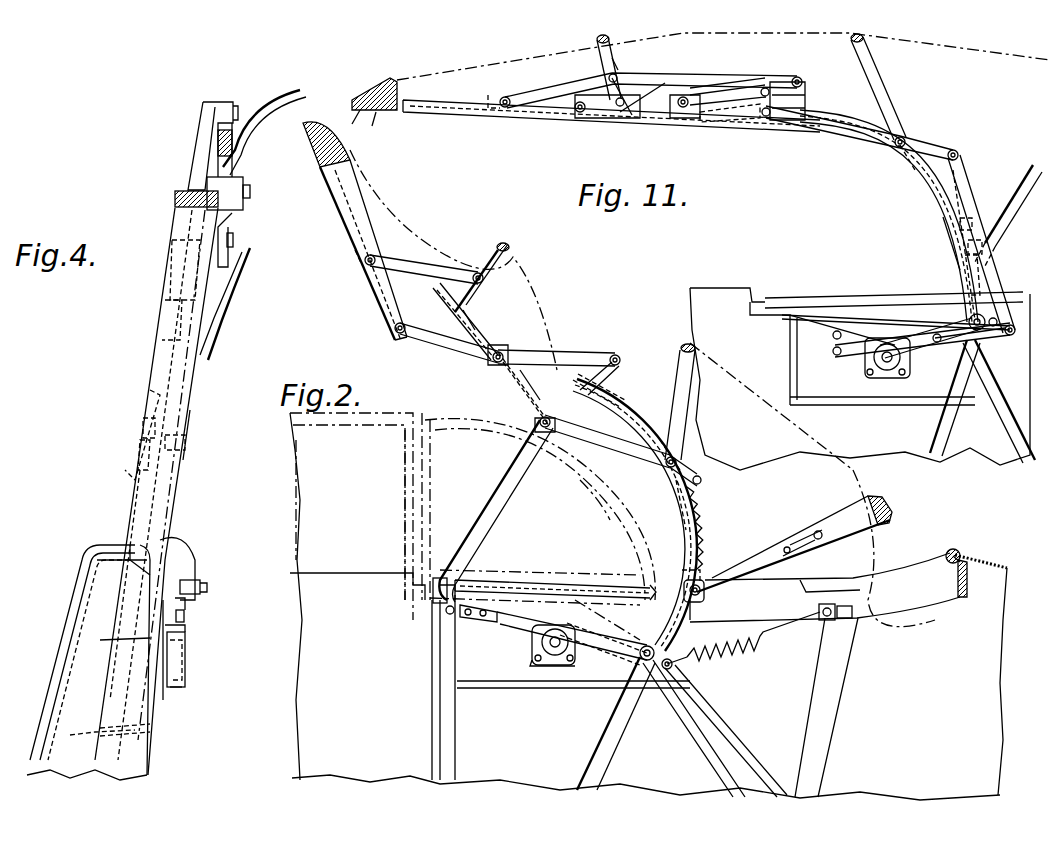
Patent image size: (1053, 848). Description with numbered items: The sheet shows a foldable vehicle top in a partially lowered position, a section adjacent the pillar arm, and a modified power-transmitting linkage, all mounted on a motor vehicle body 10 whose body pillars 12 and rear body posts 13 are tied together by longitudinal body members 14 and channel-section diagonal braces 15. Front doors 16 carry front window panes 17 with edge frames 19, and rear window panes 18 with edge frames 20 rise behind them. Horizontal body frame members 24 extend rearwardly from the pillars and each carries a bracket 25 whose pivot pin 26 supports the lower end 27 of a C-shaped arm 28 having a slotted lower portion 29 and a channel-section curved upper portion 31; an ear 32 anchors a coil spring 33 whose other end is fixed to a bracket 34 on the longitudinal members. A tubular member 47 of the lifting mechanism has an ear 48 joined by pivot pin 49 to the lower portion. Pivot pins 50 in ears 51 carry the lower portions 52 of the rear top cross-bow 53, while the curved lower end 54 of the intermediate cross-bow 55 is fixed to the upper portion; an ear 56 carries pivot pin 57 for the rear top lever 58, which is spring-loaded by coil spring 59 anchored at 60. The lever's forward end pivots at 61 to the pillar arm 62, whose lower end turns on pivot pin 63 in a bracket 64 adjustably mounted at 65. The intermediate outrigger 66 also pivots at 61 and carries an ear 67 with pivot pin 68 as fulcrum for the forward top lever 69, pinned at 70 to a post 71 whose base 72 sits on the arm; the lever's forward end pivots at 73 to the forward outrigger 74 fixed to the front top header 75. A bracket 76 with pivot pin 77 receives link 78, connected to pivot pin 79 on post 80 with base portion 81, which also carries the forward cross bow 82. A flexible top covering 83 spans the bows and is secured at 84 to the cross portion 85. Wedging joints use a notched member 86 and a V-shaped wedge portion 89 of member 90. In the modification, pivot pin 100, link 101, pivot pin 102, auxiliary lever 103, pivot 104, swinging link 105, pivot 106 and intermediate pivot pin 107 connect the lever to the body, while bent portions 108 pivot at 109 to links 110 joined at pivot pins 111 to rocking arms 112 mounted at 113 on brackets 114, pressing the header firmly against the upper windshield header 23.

In FIG. 4, the motor vehicle body 10 is at (52, 642).
In FIG. 11, the motor vehicle body 10 is at (834, 288).
In FIG. 2, the motor vehicle body 10 is at (515, 580).
In FIG. 4, the body pillars 12 is at (140, 753).
In FIG. 11, the body pillars 12 is at (780, 376).
In FIG. 2, the body pillars 12 is at (447, 736).
In FIG. 2, the rear body posts 13 is at (828, 710).
In FIG. 4, the longitudinal body members 14 is at (95, 571).
In FIG. 2, the longitudinal body members 14 is at (810, 583).
In FIG. 4, the diagonal braces 15 is at (85, 730).
In FIG. 11, the diagonal braces 15 is at (995, 438).
In FIG. 2, the diagonal braces 15 is at (685, 735).
In FIG. 11, the front doors 16 is at (708, 293).
In FIG. 2, the front doors 16 is at (345, 573).
In FIG. 2, the front window panes 17 is at (321, 500).
In FIG. 4, the rear window panes 18 is at (138, 483).
In FIG. 2, the rear window panes 18 is at (540, 554).
In FIG. 2, the edge frame 19 is at (405, 498).
In FIG. 2, the edge frame 20 is at (590, 496).
In FIG. 11, the upper windshield header 23 is at (378, 116).
In FIG. 4, the horizontal body frame members 24 is at (150, 730).
In FIG. 11, the horizontal body frame members 24 is at (840, 403).
In FIG. 2, the horizontal body frame members 24 is at (495, 686).
In FIG. 4, the bracket 25 is at (165, 698).
In FIG. 11, the bracket 25 is at (875, 358).
In FIG. 2, the bracket 25 is at (541, 642).
In FIG. 4, the pivot pin 26 is at (186, 660).
In FIG. 11, the pivot pin 26 is at (892, 376).
In FIG. 2, the pivot pin 26 is at (535, 655).
In FIG. 4, the lower end 27 is at (172, 683).
In FIG. 11, the lower end 27 is at (875, 376).
In FIG. 2, the lower end 27 is at (545, 663).
In FIG. 4, the C-shaped arm 28 is at (150, 393).
In FIG. 11, the C-shaped arm 28 is at (945, 213).
In FIG. 2, the C-shaped arm 28 is at (680, 553).
In FIG. 4, the lower portion 29 is at (182, 628).
In FIG. 11, the lower portion 29 is at (960, 318).
In FIG. 2, the lower portion 29 is at (588, 658).
In FIG. 4, the curved upper portion 31 is at (180, 206).
In FIG. 2, the curved upper portion 31 is at (632, 416).
In FIG. 11, the ear 32 is at (988, 318).
In FIG. 2, the ear 32 is at (668, 668).
In FIG. 2, the coil spring 33 is at (740, 641).
In FIG. 2, the bracket 34 is at (852, 618).
In FIG. 11, the tubular member 47 is at (945, 428).
In FIG. 2, the tubular member 47 is at (600, 742).
In FIG. 11, the ear 48 is at (966, 322).
In FIG. 2, the ear 48 is at (640, 649).
In FIG. 11, the pivot pin 49 is at (968, 315).
In FIG. 2, the pivot pin 49 is at (652, 660).
In FIG. 4, the pivot pins 50 is at (185, 441).
In FIG. 11, the pivot pins 50 is at (990, 246).
In FIG. 2, the pivot pins 50 is at (700, 592).
In FIG. 4, the ears 51 is at (140, 453).
In FIG. 11, the ears 51 is at (990, 262).
In FIG. 2, the ears 51 is at (688, 594).
In FIG. 4, the lower portions 52 is at (224, 296).
In FIG. 11, the lower portions 52 is at (1010, 198).
In FIG. 2, the lower portions 52 is at (742, 563).
In FIG. 2, the rear top cross-bow 53 is at (832, 518).
In FIG. 4, the curved lower end 54 is at (160, 318).
In FIG. 11, the curved lower end 54 is at (945, 178).
In FIG. 2, the curved lower end 54 is at (675, 508).
In FIG. 4, the intermediate top cross-bow 55 is at (268, 110).
In FIG. 11, the intermediate top cross-bow 55 is at (876, 78).
In FIG. 2, the intermediate top cross-bow 55 is at (690, 393).
In FIG. 4, the ear 56 is at (172, 258).
In FIG. 11, the ear 56 is at (890, 150).
In FIG. 2, the ear 56 is at (670, 455).
In FIG. 4, the pivot pin 57 is at (238, 238).
In FIG. 11, the pivot pin 57 is at (907, 140).
In FIG. 2, the pivot pin 57 is at (682, 460).
In FIG. 4, the rear top lever 58 is at (238, 173).
In FIG. 11, the rear top lever 58 is at (855, 116).
In FIG. 2, the rear top lever 58 is at (603, 438).
In FIG. 2, the coil spring 59 is at (700, 510).
In FIG. 4, the spring anchorage 60 is at (143, 425).
In FIG. 11, the spring anchorage 60 is at (970, 218).
In FIG. 2, the spring anchorage 60 is at (696, 578).
In FIG. 4, the pivot pin 61 is at (250, 189).
In FIG. 11, the pivot pin 61 is at (766, 116).
In FIG. 2, the pivot pin 61 is at (545, 414).
In FIG. 4, the pillar arm 62 is at (188, 420).
In FIG. 4, the pivot pin 63 is at (200, 588).
In FIG. 2, the pivot pin 63 is at (445, 614).
In FIG. 4, the bracket 64 is at (185, 603).
In FIG. 2, the bracket 64 is at (495, 618).
In FIG. 4, the adjustable mounting means 65 is at (185, 616).
In FIG. 2, the adjustable mounting means 65 is at (484, 618).
In FIG. 11, the intermediate outrigger 66 is at (722, 118).
In FIG. 2, the intermediate outrigger 66 is at (520, 383).
In FIG. 11, the ear 67 is at (662, 116).
In FIG. 2, the ear 67 is at (497, 348).
In FIG. 11, the pivot pin 68 is at (683, 108).
In FIG. 2, the pivot pin 68 is at (503, 351).
In FIG. 4, the forward top lever 69 is at (233, 146).
In FIG. 11, the forward top lever 69 is at (613, 106).
In FIG. 2, the forward top lever 69 is at (556, 350).
In FIG. 4, the pivot pin 70 is at (236, 108).
In FIG. 11, the pivot pin 70 is at (800, 78).
In FIG. 2, the pivot pin 70 is at (615, 350).
In FIG. 4, the post 71 is at (203, 146).
In FIG. 11, the post 71 is at (805, 102).
In FIG. 2, the post 71 is at (608, 376).
In FIG. 11, the base 72 is at (828, 128).
In FIG. 2, the base 72 is at (608, 396).
In FIG. 11, the pivot 73 is at (575, 110).
In FIG. 2, the pivot 73 is at (402, 318).
In FIG. 11, the forward outrigger 74 is at (460, 114).
In FIG. 2, the forward outrigger 74 is at (370, 296).
In FIG. 11, the front top header 75 is at (368, 88).
In FIG. 2, the front top header 75 is at (313, 145).
In FIG. 11, the bracket 76 is at (495, 98).
In FIG. 2, the bracket 76 is at (355, 255).
In FIG. 11, the pivot pin 77 is at (502, 95).
In FIG. 2, the pivot pin 77 is at (371, 253).
In FIG. 11, the link 78 is at (543, 88).
In FIG. 2, the link 78 is at (420, 258).
In FIG. 2, the pivot pin 79 is at (476, 268).
In FIG. 11, the post 80 is at (628, 78).
In FIG. 2, the post 80 is at (470, 294).
In FIG. 2, the base portion 81 is at (473, 318).
In FIG. 11, the forward top cross bow 82 is at (596, 43).
In FIG. 2, the forward top cross bow 82 is at (504, 241).
In FIG. 11, the flexible top covering 83 is at (775, 416).
In FIG. 2, the flexible top covering 83 is at (368, 193).
In FIG. 2, the securing point 84 is at (962, 556).
In FIG. 2, the cross portion 85 is at (970, 584).
In FIG. 2, the notched member 86 is at (390, 328).
In FIG. 2, the V-shaped wedge portion 89 is at (438, 281).
In FIG. 2, the wedge member 90 is at (450, 298).
In FIG. 11, the pivot pin 100 is at (957, 148).
In FIG. 11, the link 101 is at (972, 193).
In FIG. 11, the pivot pin 102 is at (1012, 320).
In FIG. 11, the auxiliary lever 103 is at (870, 343).
In FIG. 11, the pivot 104 is at (832, 350).
In FIG. 11, the swinging link 105 is at (832, 335).
In FIG. 11, the pivot 106 is at (835, 328).
In FIG. 11, the intermediate pivot pin 107 is at (935, 336).
In FIG. 11, the bent portions 108 is at (808, 94).
In FIG. 11, the pivot 109 is at (766, 83).
In FIG. 11, the links 110 is at (695, 83).
In FIG. 11, the pivot pins 111 is at (617, 58).
In FIG. 11, the rocking arms 112 is at (604, 73).
In FIG. 11, the pivot 113 is at (618, 120).
In FIG. 11, the brackets 114 is at (660, 78).